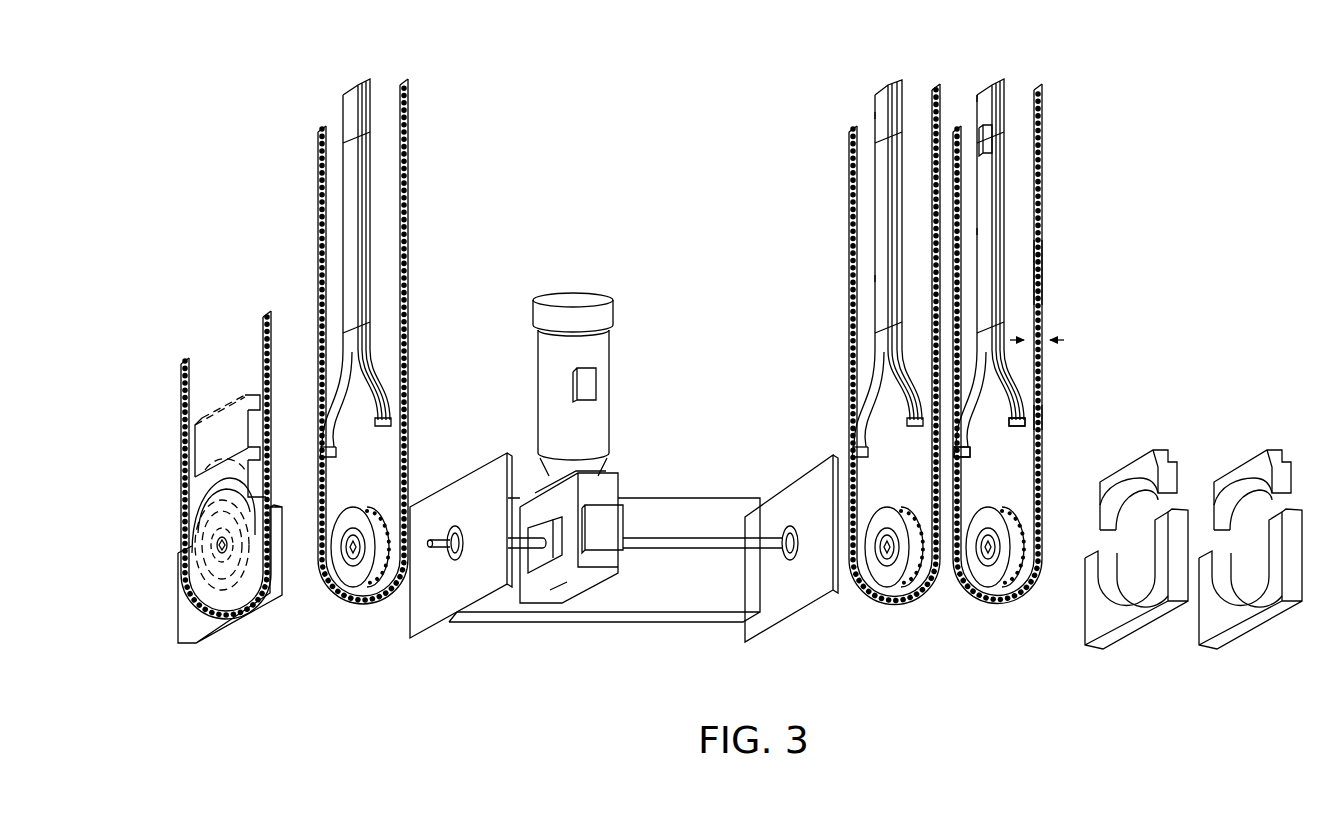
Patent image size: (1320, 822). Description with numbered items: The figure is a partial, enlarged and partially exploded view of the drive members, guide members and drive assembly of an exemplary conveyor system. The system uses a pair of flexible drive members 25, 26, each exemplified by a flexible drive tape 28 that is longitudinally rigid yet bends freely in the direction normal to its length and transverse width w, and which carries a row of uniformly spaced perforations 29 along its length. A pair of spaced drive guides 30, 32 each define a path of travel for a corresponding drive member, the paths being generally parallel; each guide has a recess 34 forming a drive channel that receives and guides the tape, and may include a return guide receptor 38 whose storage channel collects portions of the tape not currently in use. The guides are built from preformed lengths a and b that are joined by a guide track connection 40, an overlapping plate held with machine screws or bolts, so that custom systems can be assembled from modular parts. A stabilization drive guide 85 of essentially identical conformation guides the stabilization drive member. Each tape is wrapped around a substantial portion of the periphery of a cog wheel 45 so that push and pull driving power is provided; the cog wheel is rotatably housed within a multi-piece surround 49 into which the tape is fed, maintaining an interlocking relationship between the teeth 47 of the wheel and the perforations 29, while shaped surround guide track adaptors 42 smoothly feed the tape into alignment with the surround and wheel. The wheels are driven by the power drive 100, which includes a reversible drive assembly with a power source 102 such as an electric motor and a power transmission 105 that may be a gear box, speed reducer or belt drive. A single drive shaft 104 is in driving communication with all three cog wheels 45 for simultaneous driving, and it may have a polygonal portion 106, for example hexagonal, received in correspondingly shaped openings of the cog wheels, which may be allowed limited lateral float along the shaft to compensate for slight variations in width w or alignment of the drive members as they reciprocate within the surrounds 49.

The flexible drive member 25 is at (1052, 150).
The flexible drive member 26 is at (266, 347).
The flexible drive tape 28 is at (1044, 419).
The perforations 29 is at (1043, 270).
The drive guide 30 is at (1007, 172).
The drive guide 32 is at (370, 257).
The recess 34 is at (1017, 430).
The return guide receptor 38 is at (956, 458).
The guide track connection 40 is at (994, 133).
The surround guide track adaptor 42 is at (372, 338).
The cog wheel 45 is at (364, 574).
The teeth 47 is at (906, 506).
The surround 49 is at (249, 634).
The stabilization drive guide 85 is at (910, 90).
The power drive 100 is at (703, 394).
The power source 102 is at (612, 348).
The drive shaft 104 is at (700, 549).
The power transmission 105 is at (642, 479).
The polygonal portion 106 is at (452, 549).
The drive guide length a is at (882, 278).
The drive guide length b is at (881, 116).
The width w is at (1047, 340).